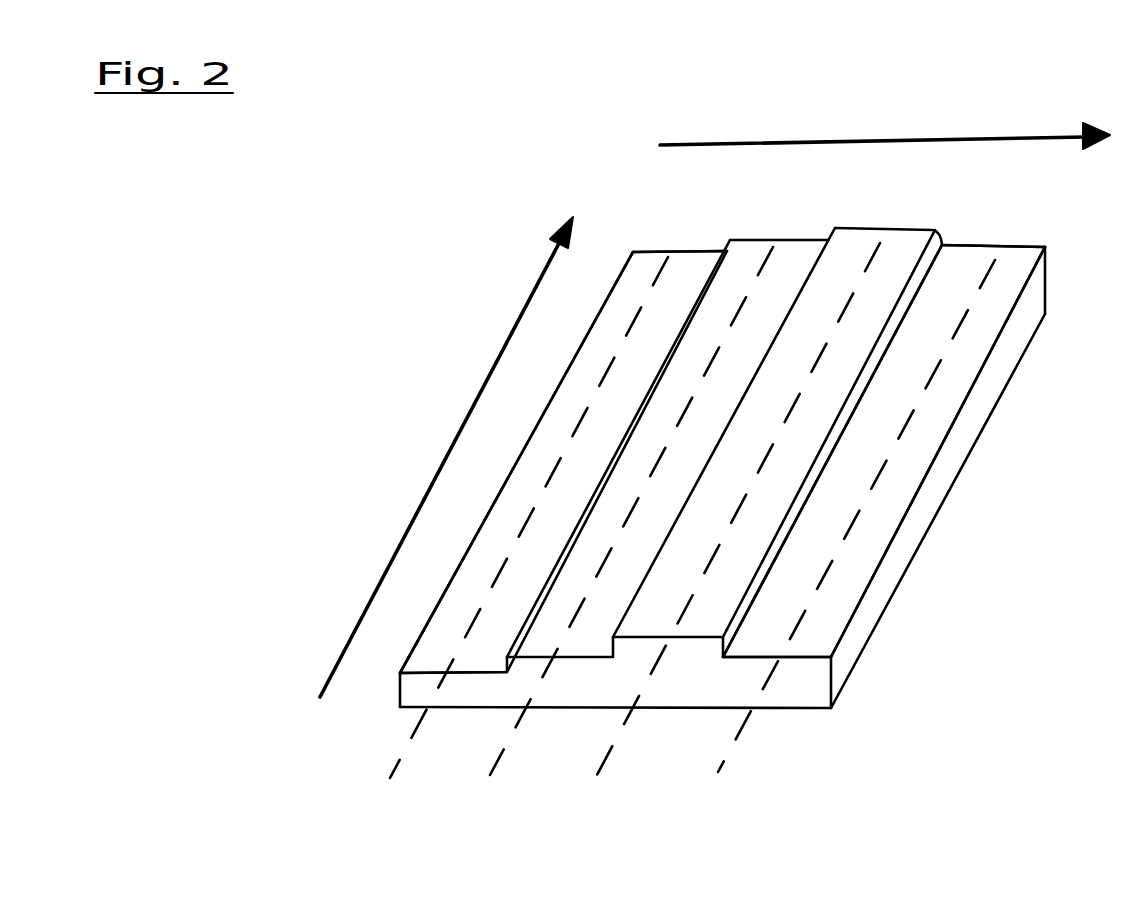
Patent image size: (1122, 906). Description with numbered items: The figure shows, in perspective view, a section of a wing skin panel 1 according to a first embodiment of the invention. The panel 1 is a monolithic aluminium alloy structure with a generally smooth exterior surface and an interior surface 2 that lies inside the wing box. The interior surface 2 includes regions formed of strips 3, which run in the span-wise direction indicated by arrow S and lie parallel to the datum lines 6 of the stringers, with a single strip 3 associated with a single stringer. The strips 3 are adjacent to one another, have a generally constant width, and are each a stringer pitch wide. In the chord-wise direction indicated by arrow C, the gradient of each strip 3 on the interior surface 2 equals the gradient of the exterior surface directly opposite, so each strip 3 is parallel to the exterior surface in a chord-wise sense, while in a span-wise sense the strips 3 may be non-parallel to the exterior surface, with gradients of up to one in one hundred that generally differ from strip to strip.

The wing skin panel 1 is at (977, 416).
The interior surface 2 is at (1022, 270).
The strips 3 is at (622, 300).
The datum lines of the stringers 6 is at (753, 740).
The span-wise direction S is at (477, 388).
The chord-wise direction C is at (947, 115).